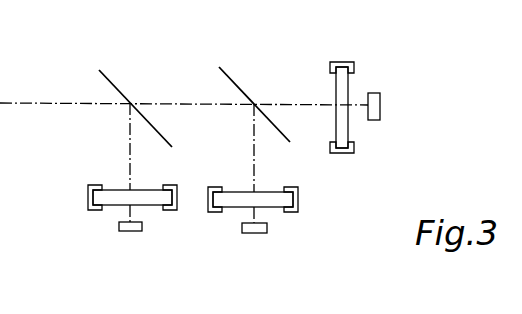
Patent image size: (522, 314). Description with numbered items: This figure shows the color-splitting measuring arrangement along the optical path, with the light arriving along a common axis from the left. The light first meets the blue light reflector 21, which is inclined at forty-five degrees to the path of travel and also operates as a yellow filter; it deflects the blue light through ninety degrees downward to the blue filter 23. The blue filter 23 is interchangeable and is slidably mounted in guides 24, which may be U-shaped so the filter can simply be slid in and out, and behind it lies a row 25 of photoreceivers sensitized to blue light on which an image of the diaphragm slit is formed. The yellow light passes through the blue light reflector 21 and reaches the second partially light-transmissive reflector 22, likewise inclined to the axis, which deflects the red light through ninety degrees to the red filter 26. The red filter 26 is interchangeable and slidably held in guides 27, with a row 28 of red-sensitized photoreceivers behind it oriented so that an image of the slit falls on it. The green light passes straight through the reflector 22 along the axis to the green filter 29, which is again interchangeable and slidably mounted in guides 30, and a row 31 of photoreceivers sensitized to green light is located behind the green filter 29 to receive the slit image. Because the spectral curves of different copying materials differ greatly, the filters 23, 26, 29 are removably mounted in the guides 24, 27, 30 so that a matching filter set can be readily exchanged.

The blue light reflector 21 is at (111, 83).
The partially light-transmissive reflector 22 is at (230, 78).
The blue filter 23 is at (118, 191).
The guides 24 is at (88, 207).
The row of photoreceivers 25 is at (137, 232).
The red filter 26 is at (245, 193).
The guides 27 is at (212, 212).
The row of photoreceivers 28 is at (260, 234).
The green filter 29 is at (336, 94).
The guides 30 is at (345, 62).
The row of photoreceivers 31 is at (390, 90).